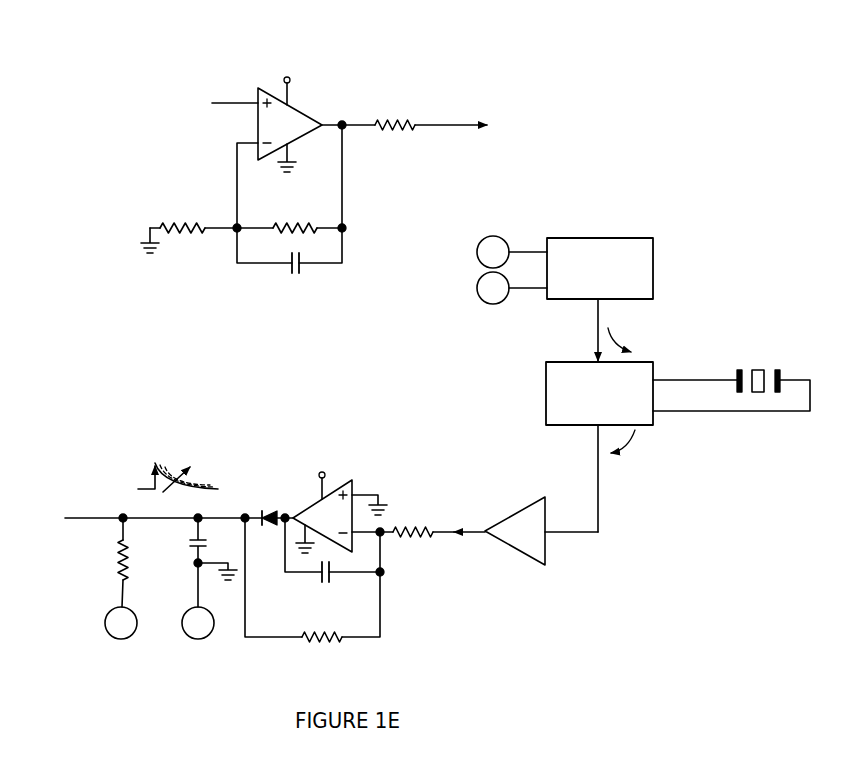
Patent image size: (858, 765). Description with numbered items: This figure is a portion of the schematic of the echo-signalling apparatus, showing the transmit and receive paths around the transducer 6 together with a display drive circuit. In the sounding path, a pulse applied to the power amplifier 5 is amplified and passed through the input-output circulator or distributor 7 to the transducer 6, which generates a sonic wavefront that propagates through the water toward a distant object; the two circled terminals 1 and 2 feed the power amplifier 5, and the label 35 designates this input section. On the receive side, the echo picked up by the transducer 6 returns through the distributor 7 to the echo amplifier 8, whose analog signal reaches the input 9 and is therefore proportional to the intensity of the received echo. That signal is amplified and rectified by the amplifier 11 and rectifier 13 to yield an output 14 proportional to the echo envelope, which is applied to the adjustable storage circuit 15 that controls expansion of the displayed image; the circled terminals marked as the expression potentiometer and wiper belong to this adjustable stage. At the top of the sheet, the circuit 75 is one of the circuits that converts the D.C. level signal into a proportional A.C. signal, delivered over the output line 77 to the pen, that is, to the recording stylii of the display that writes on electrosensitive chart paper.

The A.C. signal circuit 75 is at (313, 44).
The output line to pen 77 is at (443, 125).
The input signal section 35 is at (452, 280).
The input terminal 1 is at (512, 252).
The input terminal 2 is at (512, 288).
The power amplifier 5 is at (653, 240).
The distributor 7 is at (546, 386).
The transducer 6 is at (763, 362).
The echo amplifier 8 is at (545, 497).
The input 9 is at (462, 530).
The amplifier 11 is at (352, 481).
The rectifier 13 is at (244, 512).
The output 14 is at (123, 510).
The adjustable storage circuit 15 is at (177, 588).